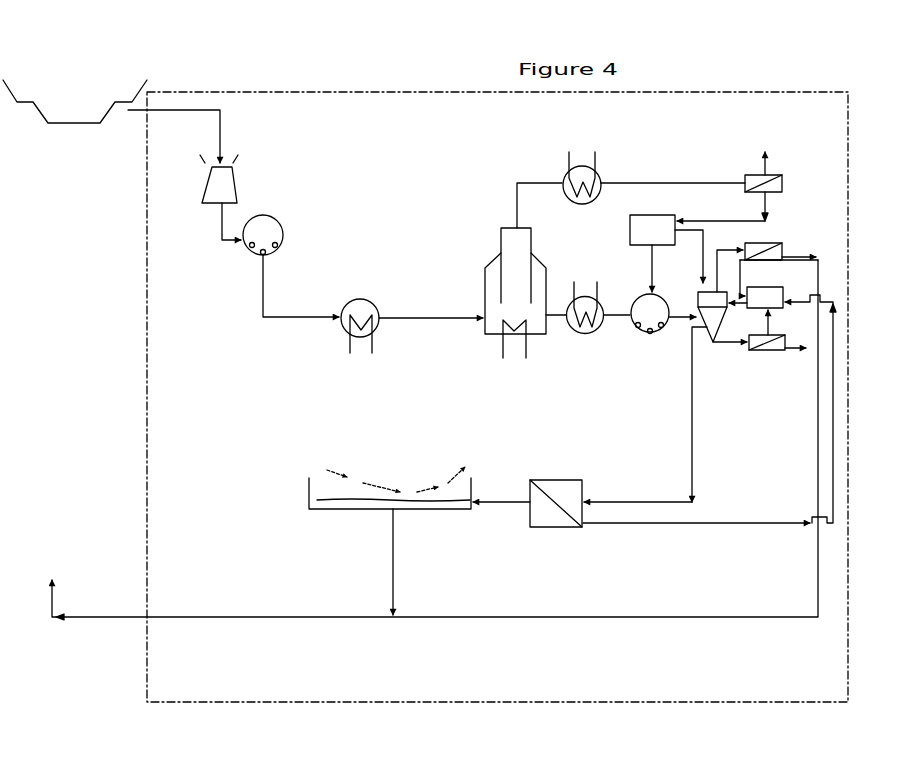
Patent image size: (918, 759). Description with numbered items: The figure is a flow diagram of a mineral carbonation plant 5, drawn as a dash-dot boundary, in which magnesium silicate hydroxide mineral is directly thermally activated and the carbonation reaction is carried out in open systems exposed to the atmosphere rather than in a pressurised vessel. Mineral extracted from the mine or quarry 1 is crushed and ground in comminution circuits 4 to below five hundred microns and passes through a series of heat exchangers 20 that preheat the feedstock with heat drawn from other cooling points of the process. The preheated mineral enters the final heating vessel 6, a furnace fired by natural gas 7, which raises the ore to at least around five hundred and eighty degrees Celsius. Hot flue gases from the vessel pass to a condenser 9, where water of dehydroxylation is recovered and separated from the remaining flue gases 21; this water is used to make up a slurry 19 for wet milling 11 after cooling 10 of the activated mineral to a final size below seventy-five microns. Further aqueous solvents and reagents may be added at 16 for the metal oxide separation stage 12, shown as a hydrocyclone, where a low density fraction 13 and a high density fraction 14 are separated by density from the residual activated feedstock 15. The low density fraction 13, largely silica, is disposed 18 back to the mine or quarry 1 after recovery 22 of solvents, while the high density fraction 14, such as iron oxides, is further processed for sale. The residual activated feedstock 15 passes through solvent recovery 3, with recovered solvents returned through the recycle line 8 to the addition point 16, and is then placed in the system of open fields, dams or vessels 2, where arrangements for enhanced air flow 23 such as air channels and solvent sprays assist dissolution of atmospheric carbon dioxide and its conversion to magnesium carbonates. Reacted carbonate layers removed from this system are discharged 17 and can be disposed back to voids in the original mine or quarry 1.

The mine or quarry 1 is at (77, 123).
The system of open fields, dams or vessels 2 is at (302, 498).
The aqueous solvent recovery 3 is at (568, 470).
The comminution circuits 4 is at (250, 167).
The mineral carbonation plant 5 is at (147, 157).
The final heating vessel 6 is at (487, 243).
The natural gas 7 is at (508, 357).
The recycled aqueous solvent stream 8 is at (713, 533).
The condenser 9 is at (558, 165).
The cooling stage 10 is at (583, 273).
The wet milling 11 is at (623, 290).
The metal oxide separation stage 12 is at (683, 330).
The low density fraction 13 is at (800, 255).
The high density fraction 14 is at (798, 358).
The residual activated feedstock 15 is at (705, 420).
The slurry solvents and reagents addition 16 is at (768, 287).
The reacted magnesium carbonate layers disposal 17 is at (400, 552).
The disposal 18 is at (78, 628).
The slurry make-up 19 is at (683, 212).
The heat exchangers 20 is at (362, 292).
The remaining flue gases 21 is at (762, 165).
The aqueous solvent recovery 22 is at (772, 237).
The enhanced air flow arrangements 23 is at (332, 465).